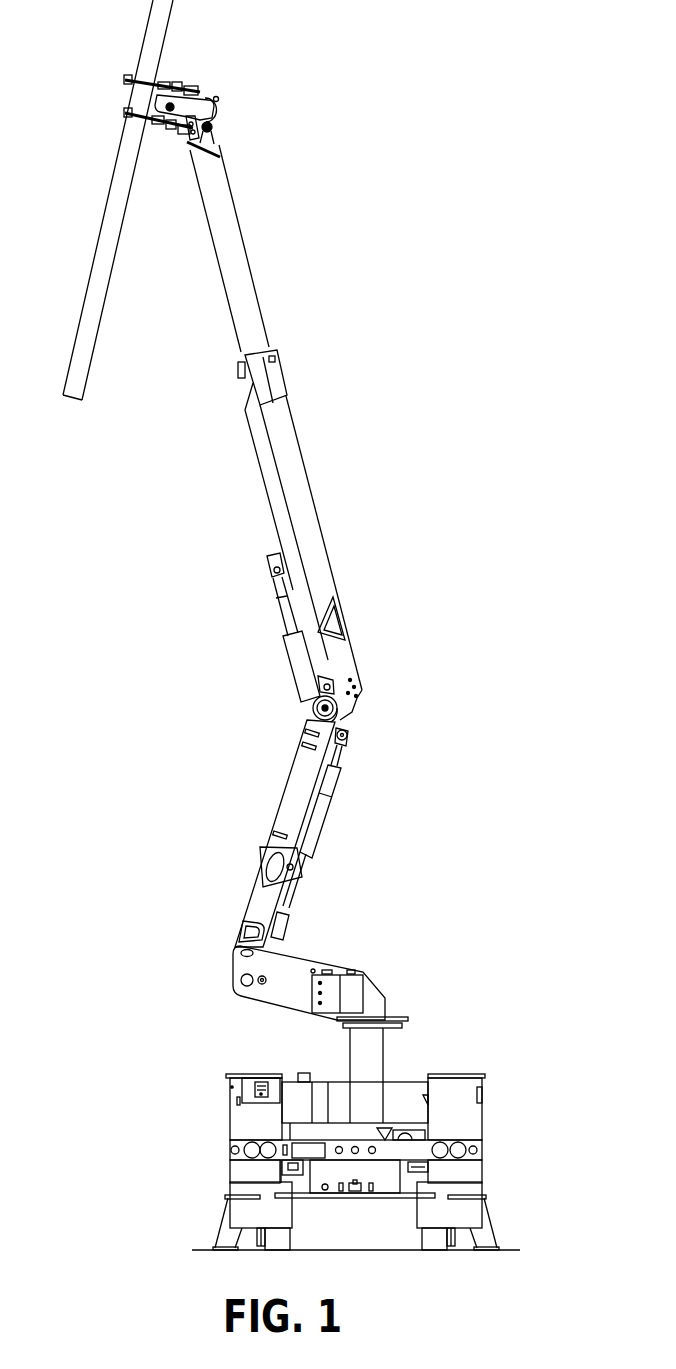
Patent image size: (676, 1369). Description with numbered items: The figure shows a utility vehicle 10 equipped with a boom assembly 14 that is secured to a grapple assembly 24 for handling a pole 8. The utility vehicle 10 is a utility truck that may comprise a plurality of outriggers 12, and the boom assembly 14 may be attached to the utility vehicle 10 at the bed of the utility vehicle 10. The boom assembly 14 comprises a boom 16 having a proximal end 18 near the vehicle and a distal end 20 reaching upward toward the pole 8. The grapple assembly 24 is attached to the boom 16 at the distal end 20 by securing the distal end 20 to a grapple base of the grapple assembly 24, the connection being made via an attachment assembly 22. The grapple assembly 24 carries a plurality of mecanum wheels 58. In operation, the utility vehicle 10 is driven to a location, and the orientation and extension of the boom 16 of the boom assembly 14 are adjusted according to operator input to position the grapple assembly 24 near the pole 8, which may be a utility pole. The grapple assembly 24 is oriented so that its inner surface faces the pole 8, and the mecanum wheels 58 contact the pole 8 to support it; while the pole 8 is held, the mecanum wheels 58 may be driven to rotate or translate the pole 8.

The pole 8 is at (118, 177).
The utility vehicle 10 is at (506, 1126).
The outriggers 12 is at (222, 1230).
The boom assembly 14 is at (333, 495).
The boom 16 is at (262, 483).
The proximal end 18 is at (278, 793).
The distal end 20 is at (242, 287).
The attachment assembly 22 is at (222, 128).
The grapple assembly 24 is at (201, 75).
The mecanum wheels 58 is at (130, 80).